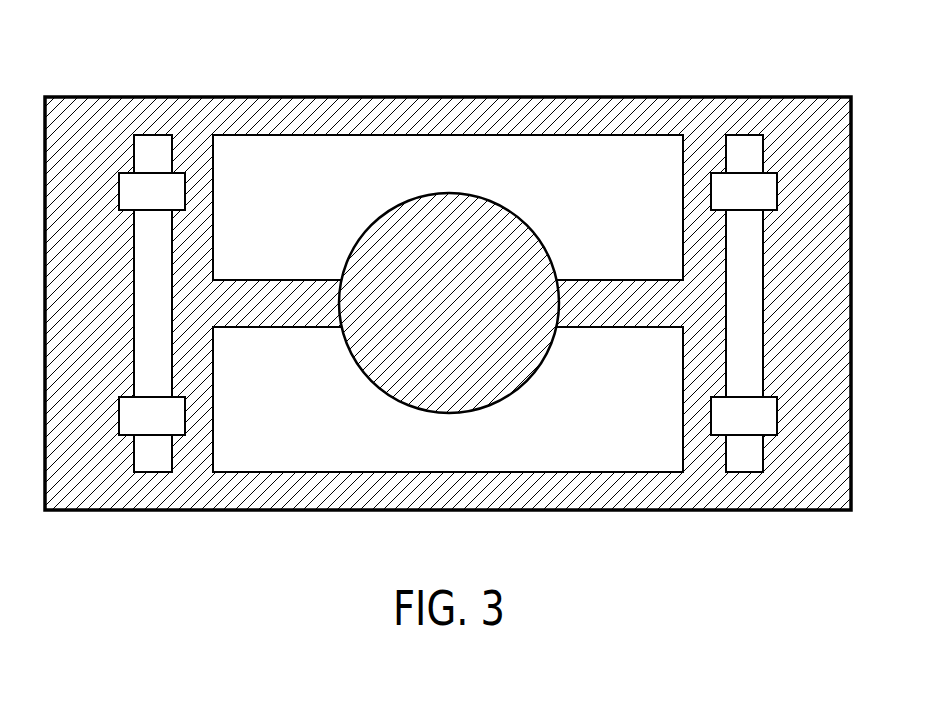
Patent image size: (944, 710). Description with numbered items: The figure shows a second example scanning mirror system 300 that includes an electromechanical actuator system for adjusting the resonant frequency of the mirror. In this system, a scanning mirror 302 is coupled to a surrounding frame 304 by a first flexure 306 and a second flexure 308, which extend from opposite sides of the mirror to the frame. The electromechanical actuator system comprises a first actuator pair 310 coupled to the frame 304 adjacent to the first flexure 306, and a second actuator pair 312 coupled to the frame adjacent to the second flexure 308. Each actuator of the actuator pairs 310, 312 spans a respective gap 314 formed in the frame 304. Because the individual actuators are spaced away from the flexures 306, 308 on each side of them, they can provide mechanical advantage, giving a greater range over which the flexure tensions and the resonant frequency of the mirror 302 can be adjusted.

The scanning mirror system 300 is at (447, 50).
The scanning mirror 302 is at (372, 257).
The frame 304 is at (626, 108).
The first flexure 306 is at (268, 302).
The second flexure 308 is at (585, 302).
The first actuator pair 310 is at (110, 455).
The second actuator pair 312 is at (786, 455).
The gaps 314 is at (153, 146).